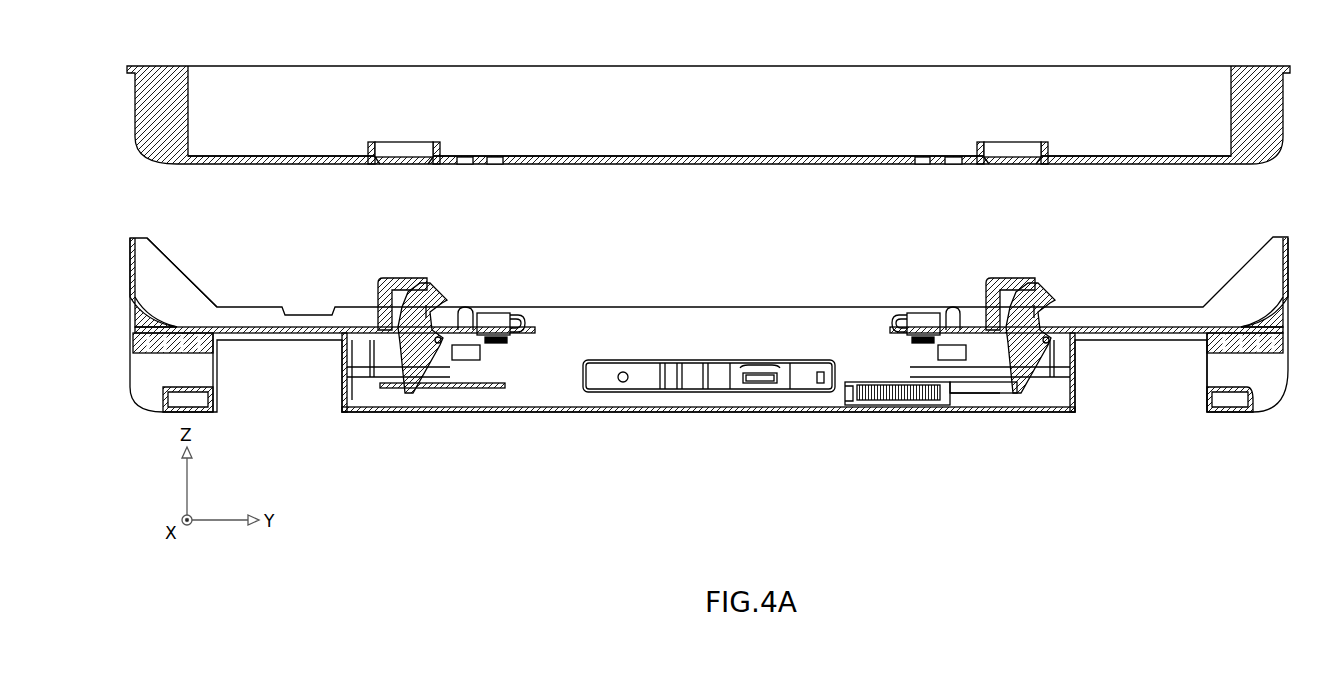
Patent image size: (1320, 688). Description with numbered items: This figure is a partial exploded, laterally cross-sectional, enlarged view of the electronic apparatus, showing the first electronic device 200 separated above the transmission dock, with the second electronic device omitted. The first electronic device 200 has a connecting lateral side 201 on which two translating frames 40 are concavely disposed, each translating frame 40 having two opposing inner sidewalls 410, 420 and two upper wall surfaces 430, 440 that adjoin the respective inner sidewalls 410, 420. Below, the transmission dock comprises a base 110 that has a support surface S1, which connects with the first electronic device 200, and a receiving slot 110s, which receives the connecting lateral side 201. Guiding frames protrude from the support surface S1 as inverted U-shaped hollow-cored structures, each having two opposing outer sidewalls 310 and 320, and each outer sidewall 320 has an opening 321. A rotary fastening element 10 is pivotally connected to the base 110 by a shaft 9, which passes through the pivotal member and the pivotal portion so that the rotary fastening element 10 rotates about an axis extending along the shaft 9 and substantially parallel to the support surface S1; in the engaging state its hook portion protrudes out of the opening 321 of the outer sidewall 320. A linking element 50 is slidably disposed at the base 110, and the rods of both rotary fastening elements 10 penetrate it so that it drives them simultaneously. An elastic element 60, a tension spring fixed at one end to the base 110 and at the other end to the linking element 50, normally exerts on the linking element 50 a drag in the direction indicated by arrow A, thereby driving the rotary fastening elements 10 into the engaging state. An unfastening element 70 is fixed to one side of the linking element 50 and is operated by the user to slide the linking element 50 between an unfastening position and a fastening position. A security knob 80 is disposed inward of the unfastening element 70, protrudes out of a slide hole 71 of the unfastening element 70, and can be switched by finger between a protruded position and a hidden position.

The first electronic device 200 is at (708, 144).
The connecting lateral side 201 is at (1190, 165).
The translating frame 40 is at (707, 147).
The upper wall surface 430 is at (372, 142).
The upper wall surface 440 is at (435, 142).
The inner sidewall 410 is at (379, 158).
The inner sidewall 420 is at (429, 156).
The base 110 is at (708, 308).
The receiving slot 110s is at (157, 285).
The support surface S1 is at (200, 327).
The rotary fastening element 10 is at (733, 340).
The outer sidewall 310 is at (378, 300).
The outer sidewall 320 is at (425, 283).
The opening 321 is at (432, 313).
The shaft 9 is at (440, 347).
The unfastening element 70 is at (709, 393).
The slide hole 71 is at (763, 365).
The security knob 80 is at (758, 392).
The elastic element 60 is at (875, 407).
The linking element 50 is at (993, 393).
The arrow A is at (967, 443).